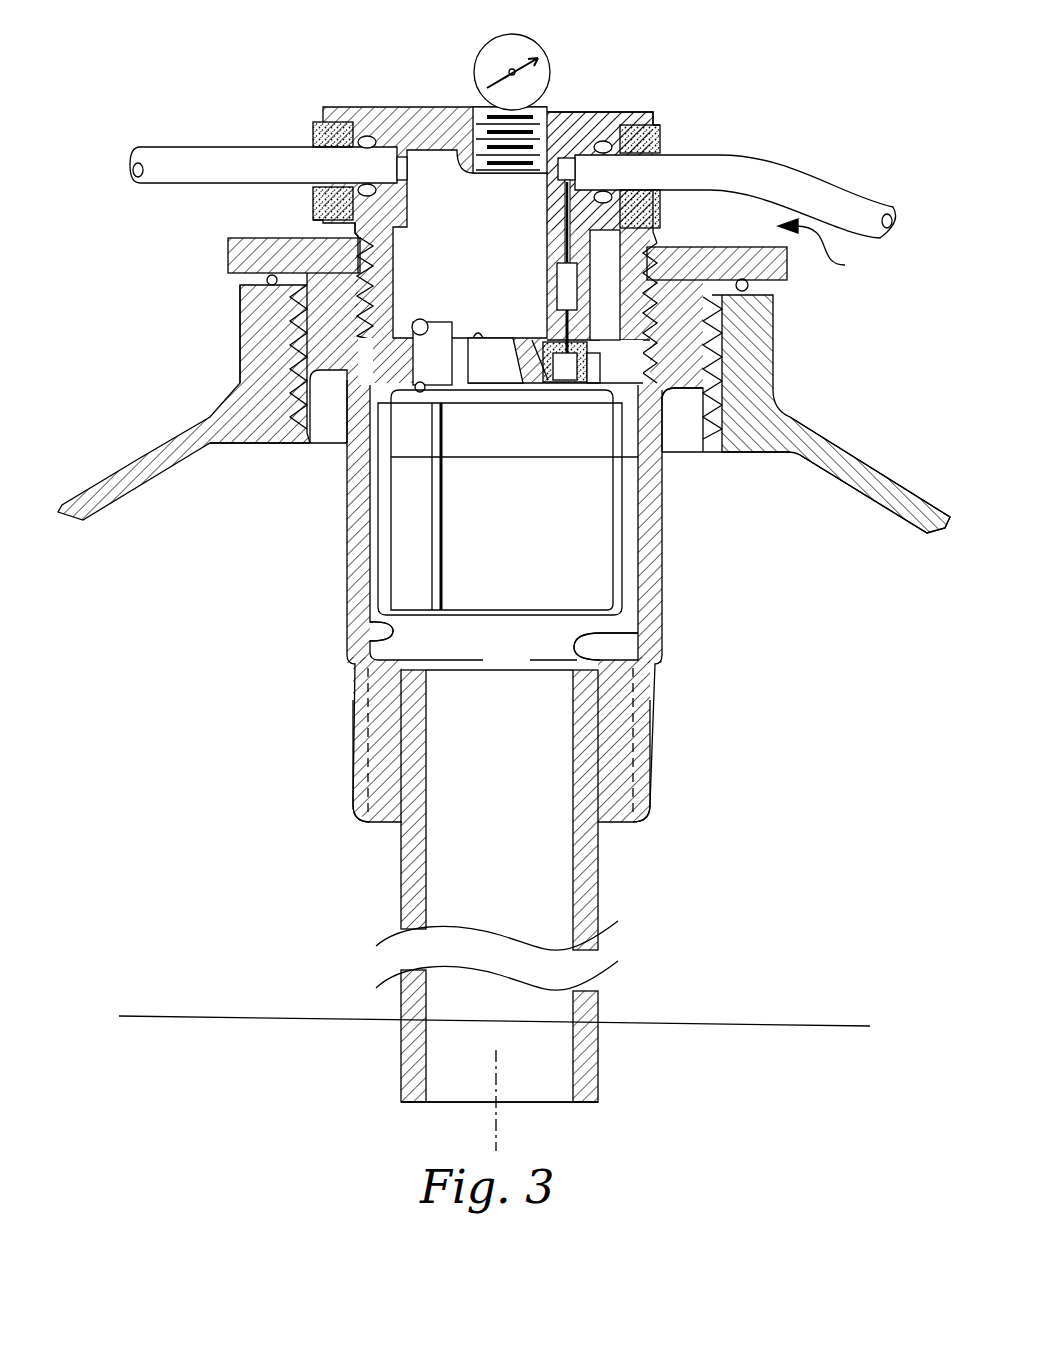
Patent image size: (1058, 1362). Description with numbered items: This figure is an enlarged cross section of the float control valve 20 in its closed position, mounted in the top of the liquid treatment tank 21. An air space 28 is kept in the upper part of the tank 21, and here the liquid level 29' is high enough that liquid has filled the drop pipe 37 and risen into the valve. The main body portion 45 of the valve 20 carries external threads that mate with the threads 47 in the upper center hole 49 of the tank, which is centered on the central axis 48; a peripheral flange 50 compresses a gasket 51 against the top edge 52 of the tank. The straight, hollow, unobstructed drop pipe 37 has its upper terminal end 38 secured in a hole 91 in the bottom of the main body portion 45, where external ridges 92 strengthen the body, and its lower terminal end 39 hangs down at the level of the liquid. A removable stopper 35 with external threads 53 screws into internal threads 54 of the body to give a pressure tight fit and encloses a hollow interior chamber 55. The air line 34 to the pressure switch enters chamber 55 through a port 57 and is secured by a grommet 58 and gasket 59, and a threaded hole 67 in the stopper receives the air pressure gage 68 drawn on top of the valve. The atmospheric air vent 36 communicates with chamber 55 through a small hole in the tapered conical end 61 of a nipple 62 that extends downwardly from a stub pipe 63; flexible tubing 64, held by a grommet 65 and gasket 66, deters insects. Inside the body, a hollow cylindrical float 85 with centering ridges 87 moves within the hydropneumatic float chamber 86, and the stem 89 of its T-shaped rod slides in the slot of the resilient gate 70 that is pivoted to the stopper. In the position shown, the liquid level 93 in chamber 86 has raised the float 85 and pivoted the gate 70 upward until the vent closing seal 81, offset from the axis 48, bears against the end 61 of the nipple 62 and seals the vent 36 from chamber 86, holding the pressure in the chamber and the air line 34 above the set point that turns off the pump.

The control valve 20 is at (827, 252).
The tank 21 is at (907, 522).
The air space 28 is at (204, 866).
The liquid level 29' is at (494, 983).
The air line 34 is at (177, 146).
The removable stopper 35 is at (642, 110).
The atmospheric air vent 36 is at (585, 166).
The drop pipe 37 is at (598, 894).
The upper terminal end 38 is at (430, 674).
The lower terminal end 39 is at (586, 1104).
The main body portion 45 is at (348, 572).
The threads 47 is at (297, 440).
The central axis 48 is at (496, 1127).
The upper center hole 49 is at (680, 432).
The peripheral flange 50 is at (228, 258).
The gasket 51 is at (240, 304).
The top edge 52 is at (773, 302).
The external threads 53 is at (373, 234).
The internal threads 54 is at (650, 256).
The hollow interior chamber 55 is at (410, 290).
The port 57 is at (402, 168).
The grommet 58 is at (318, 136).
The gasket 59 is at (393, 231).
The tapered conical end 61 is at (547, 317).
The nipple 62 is at (547, 281).
The stub pipe 63 is at (545, 248).
The flexible tubing 64 is at (857, 183).
The grommet 65 is at (660, 138).
The gasket 66 is at (606, 144).
The threaded hole 67 is at (482, 142).
The pressure gauge 68 is at (548, 33).
The gate 70 is at (468, 340).
The vent closing seal 81 is at (573, 362).
The float 85 is at (535, 558).
The float chamber 86 is at (372, 633).
The ridges 87 is at (505, 604).
The stem 89 is at (438, 322).
The hole 91 is at (603, 641).
The ridges 92 is at (648, 803).
The liquid level 93 is at (397, 464).